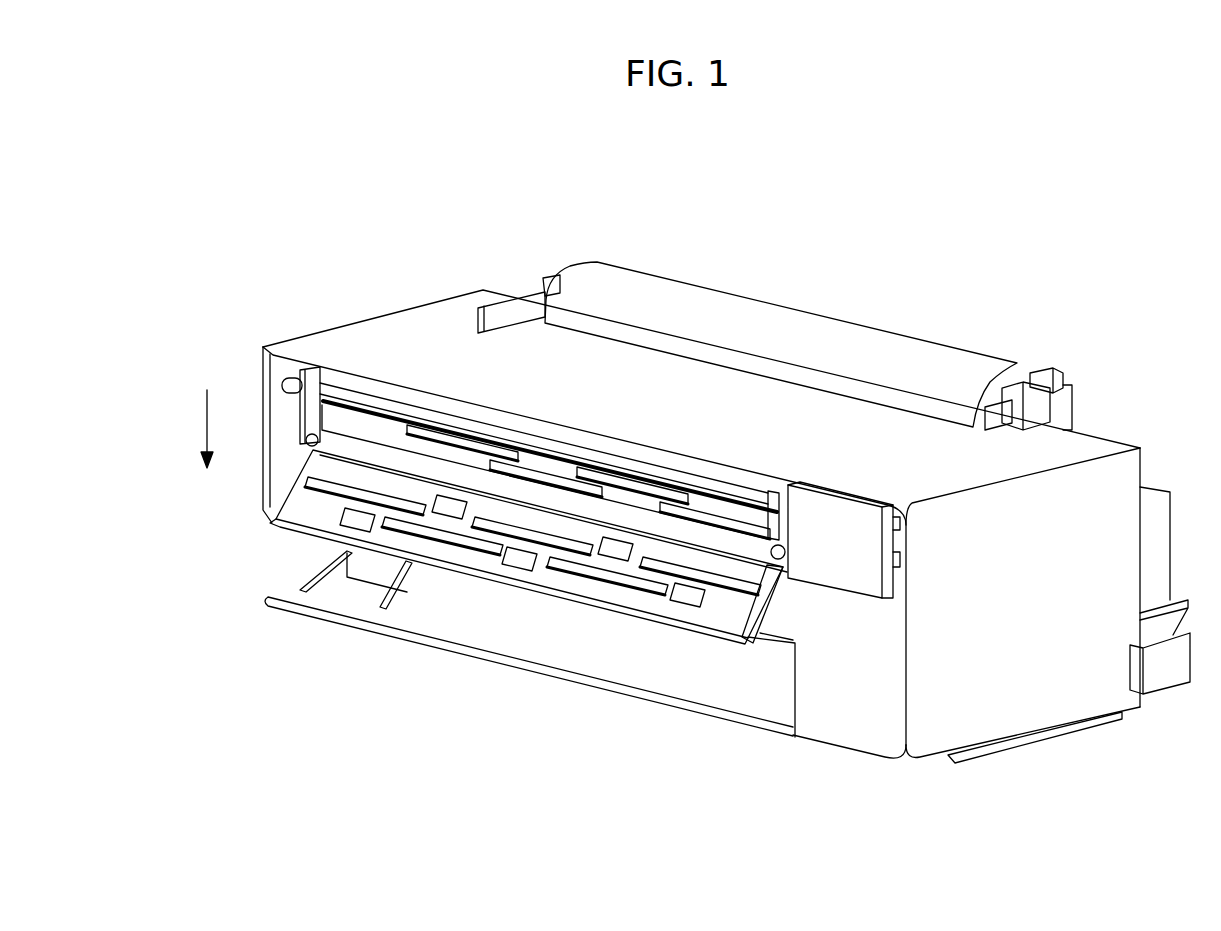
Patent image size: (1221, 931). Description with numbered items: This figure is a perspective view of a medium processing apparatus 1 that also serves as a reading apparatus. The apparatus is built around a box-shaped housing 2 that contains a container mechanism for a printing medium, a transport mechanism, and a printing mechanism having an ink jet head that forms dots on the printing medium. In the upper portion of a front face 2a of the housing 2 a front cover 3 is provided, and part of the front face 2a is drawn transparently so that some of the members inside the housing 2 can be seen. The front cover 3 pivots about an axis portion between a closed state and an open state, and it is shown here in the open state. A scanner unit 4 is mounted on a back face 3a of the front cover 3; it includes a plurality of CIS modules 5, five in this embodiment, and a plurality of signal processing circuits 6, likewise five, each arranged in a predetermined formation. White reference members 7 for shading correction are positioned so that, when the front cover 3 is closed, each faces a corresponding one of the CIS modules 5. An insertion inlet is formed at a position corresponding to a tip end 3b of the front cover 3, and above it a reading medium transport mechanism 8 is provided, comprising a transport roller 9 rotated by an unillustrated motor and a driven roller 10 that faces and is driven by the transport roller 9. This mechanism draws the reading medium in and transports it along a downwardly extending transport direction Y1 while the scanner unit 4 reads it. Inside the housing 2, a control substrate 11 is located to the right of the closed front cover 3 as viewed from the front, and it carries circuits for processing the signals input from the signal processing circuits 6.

The medium processing apparatus 1 is at (752, 172).
The housing 2 is at (1042, 628).
The front face 2a is at (835, 713).
The front cover 3 is at (305, 503).
The back face 3a is at (733, 607).
The tip end 3b is at (518, 555).
The scanner unit 4 is at (783, 602).
The CIS module 5 is at (680, 570).
The signal processing circuit 6 is at (453, 510).
The white reference member 7 is at (638, 483).
The reading medium transport mechanism 8 is at (444, 395).
The transport roller 9 is at (367, 382).
The driven roller 10 is at (340, 382).
The control substrate 11 is at (847, 553).
The transport direction Y1 is at (203, 430).